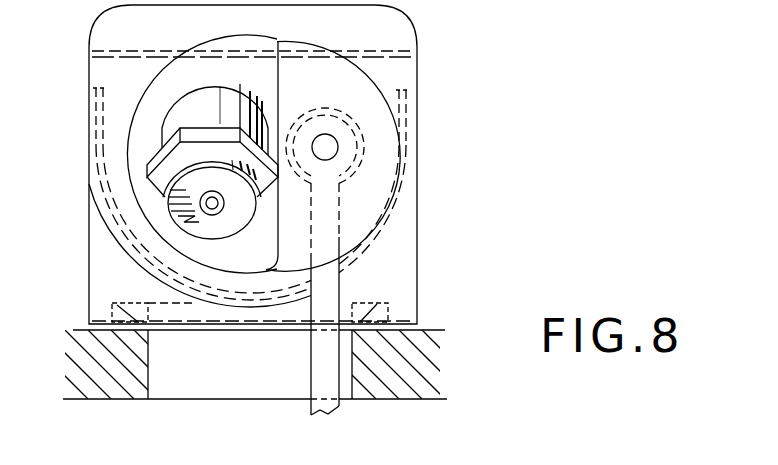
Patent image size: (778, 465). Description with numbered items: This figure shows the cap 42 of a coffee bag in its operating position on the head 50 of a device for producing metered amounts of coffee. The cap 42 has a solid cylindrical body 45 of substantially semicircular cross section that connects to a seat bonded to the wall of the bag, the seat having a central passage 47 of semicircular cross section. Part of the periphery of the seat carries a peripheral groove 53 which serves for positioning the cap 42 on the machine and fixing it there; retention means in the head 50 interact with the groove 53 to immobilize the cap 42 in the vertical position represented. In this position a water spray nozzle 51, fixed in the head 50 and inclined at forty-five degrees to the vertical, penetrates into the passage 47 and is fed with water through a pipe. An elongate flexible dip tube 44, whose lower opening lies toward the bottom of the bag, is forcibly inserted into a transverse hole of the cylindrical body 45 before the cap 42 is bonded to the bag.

The cap 42 is at (430, 22).
The dip tube 44 is at (325, 353).
The cylindrical body 45 is at (357, 88).
The central passage 47 is at (137, 147).
The head 50 is at (428, 338).
The water spray nozzle 51 is at (197, 217).
The peripheral groove 53 is at (104, 110).